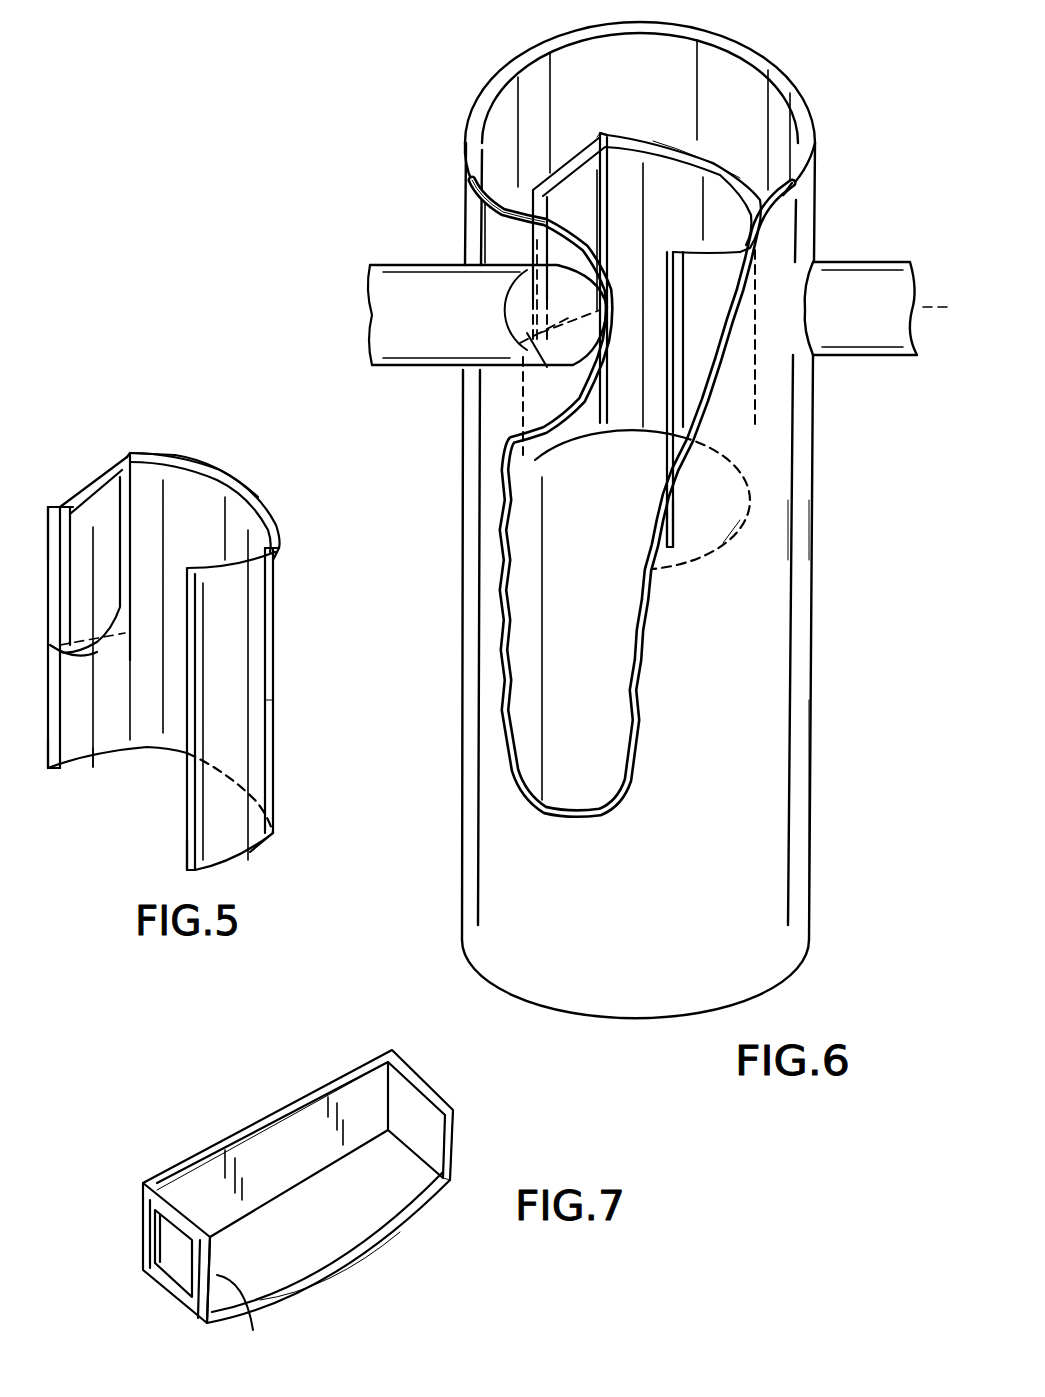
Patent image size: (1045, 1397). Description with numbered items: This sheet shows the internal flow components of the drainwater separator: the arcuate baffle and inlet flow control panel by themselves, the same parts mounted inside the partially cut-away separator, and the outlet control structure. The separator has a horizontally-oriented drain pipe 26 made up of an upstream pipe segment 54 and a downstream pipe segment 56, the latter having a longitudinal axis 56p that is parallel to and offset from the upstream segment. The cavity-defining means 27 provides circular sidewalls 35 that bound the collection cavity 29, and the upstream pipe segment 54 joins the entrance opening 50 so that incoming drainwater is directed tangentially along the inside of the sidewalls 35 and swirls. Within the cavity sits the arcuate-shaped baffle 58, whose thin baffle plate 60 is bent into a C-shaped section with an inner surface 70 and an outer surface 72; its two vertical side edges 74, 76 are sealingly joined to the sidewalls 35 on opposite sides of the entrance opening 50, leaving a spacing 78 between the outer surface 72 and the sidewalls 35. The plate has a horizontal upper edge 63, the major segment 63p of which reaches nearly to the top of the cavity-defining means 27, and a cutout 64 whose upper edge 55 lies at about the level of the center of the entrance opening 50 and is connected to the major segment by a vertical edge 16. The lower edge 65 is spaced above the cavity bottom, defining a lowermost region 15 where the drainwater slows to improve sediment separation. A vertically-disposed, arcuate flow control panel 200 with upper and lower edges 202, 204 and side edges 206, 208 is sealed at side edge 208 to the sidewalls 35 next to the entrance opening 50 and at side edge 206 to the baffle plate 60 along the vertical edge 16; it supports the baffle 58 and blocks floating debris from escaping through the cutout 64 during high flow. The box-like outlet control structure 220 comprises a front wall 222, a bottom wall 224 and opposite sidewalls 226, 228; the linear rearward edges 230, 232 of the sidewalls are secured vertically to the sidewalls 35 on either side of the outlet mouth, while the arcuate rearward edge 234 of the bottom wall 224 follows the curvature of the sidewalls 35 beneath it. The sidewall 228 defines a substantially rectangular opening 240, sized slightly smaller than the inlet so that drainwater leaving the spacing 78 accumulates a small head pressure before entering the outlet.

In FIG. 6, the lowermost region 15 is at (632, 497).
In FIG. 5, the vertically-disposed edge 16 is at (130, 493).
In FIG. 6, the drain pipe 26 is at (857, 393).
In FIG. 6, the cavity-defining means 27 is at (828, 830).
In FIG. 6, the collection cavity 29 is at (767, 853).
In FIG. 6, the sidewalls 35 is at (800, 533).
In FIG. 6, the entrance opening 50 is at (507, 302).
In FIG. 6, the upstream pipe segment 54 is at (400, 262).
In FIG. 5, the upper edge of cutout 55 is at (118, 477).
In FIG. 6, the upper edge of cutout 55 is at (520, 335).
In FIG. 6, the downstream pipe segment 56 is at (887, 262).
In FIG. 6, the longitudinal axis of downstream pipe segment 56p is at (925, 307).
In FIG. 5, the arcuate-shaped baffle 58 is at (243, 870).
In FIG. 6, the arcuate-shaped baffle 58 is at (840, 568).
In FIG. 5, the baffle plate 60 is at (257, 735).
In FIG. 6, the baffle plate 60 is at (755, 423).
In FIG. 5, the upper edge 63 is at (245, 492).
In FIG. 6, the upper edge 63 is at (743, 173).
In FIG. 5, the major segment of upper edge 63p is at (197, 460).
In FIG. 6, the major segment of upper edge 63p is at (767, 85).
In FIG. 5, the cutout 64 is at (53, 657).
In FIG. 5, the lower edge 65 is at (263, 847).
In FIG. 6, the lower edge 65 is at (723, 543).
In FIG. 5, the inner surface 70 is at (263, 493).
In FIG. 5, the outer surface 72 is at (260, 580).
In FIG. 6, the outer surface 72 is at (675, 399).
In FIG. 5, the side edge 74 is at (183, 847).
In FIG. 6, the side edge 74 is at (655, 548).
In FIG. 5, the side edge 76 is at (45, 770).
In FIG. 6, the side edge 76 is at (535, 197).
In FIG. 6, the spacing 78 is at (787, 187).
In FIG. 5, the flow control panel 200 is at (110, 470).
In FIG. 6, the flow control panel 200 is at (580, 167).
In FIG. 5, the upper edge 202 is at (73, 505).
In FIG. 5, the lower edge 204 is at (96, 769).
In FIG. 5, the side edge 206 is at (173, 457).
In FIG. 6, the side edge 206 is at (703, 147).
In FIG. 5, the side edge 208 is at (58, 522).
In FIG. 7, the outlet control structure 220 is at (453, 1110).
In FIG. 7, the front wall 222 is at (253, 1122).
In FIG. 7, the bottom wall 224 is at (318, 1287).
In FIG. 7, the sidewall 226 is at (457, 1143).
In FIG. 7, the sidewall 228 is at (182, 1290).
In FIG. 7, the rearward edge 230 is at (458, 1157).
In FIG. 7, the rearward edge 232 is at (254, 1317).
In FIG. 7, the arcuate rearward edge 234 is at (400, 1230).
In FIG. 7, the opening 240 is at (147, 1187).